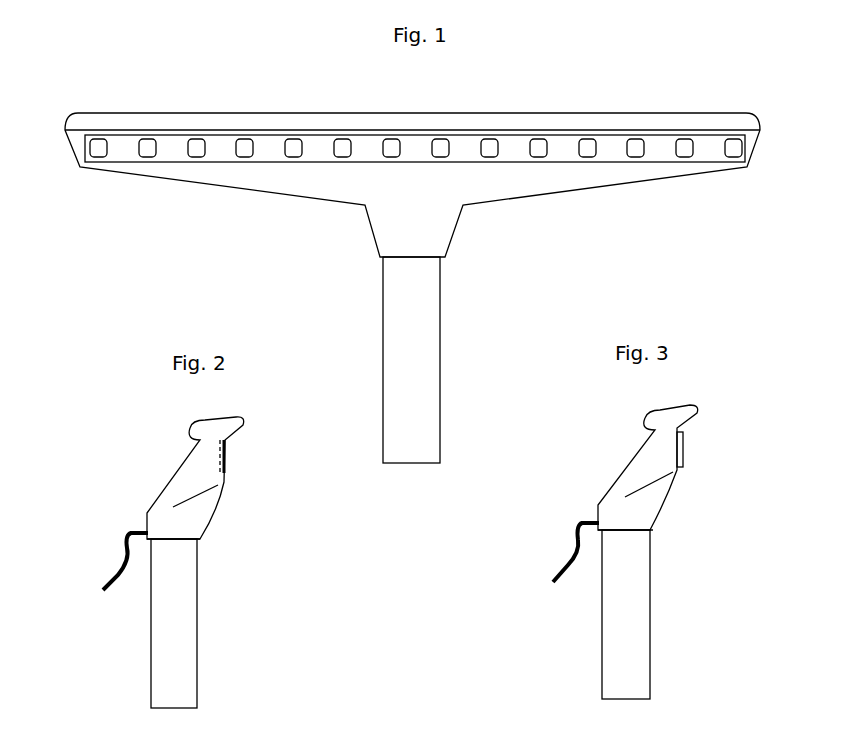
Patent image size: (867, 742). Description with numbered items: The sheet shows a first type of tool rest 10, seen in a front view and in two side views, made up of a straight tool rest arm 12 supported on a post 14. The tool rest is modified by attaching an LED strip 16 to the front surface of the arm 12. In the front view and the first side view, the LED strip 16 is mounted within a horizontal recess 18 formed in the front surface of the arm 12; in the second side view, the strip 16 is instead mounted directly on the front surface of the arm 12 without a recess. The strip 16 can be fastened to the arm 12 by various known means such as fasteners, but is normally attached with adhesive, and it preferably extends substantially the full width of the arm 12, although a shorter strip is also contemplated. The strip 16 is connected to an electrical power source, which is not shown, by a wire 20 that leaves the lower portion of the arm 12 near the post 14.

In FIG. 1, the tool rest 10 is at (249, 76).
In FIG. 1, the tool rest arm 12 is at (518, 182).
In FIG. 2, the tool rest arm 12 is at (163, 452).
In FIG. 3, the tool rest arm 12 is at (622, 442).
In FIG. 1, the post 14 is at (406, 312).
In FIG. 2, the post 14 is at (187, 647).
In FIG. 3, the post 14 is at (638, 635).
In FIG. 1, the LED strip 16 is at (223, 150).
In FIG. 2, the LED strip 16 is at (225, 457).
In FIG. 3, the LED strip 16 is at (685, 443).
In FIG. 1, the horizontal recess 18 is at (712, 135).
In FIG. 2, the horizontal recess 18 is at (222, 467).
In FIG. 2, the wire 20 is at (125, 532).
In FIG. 3, the wire 20 is at (585, 518).